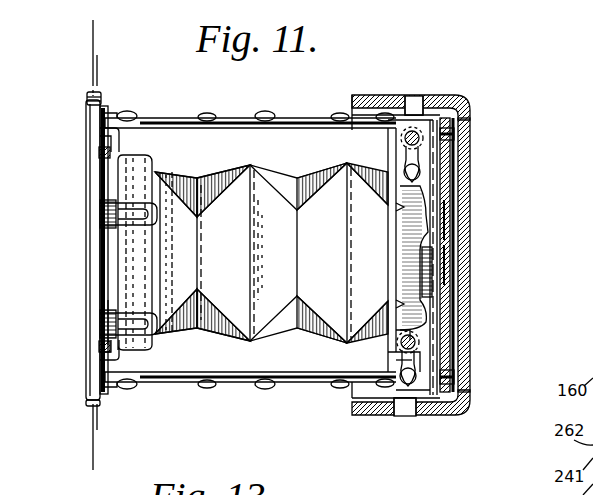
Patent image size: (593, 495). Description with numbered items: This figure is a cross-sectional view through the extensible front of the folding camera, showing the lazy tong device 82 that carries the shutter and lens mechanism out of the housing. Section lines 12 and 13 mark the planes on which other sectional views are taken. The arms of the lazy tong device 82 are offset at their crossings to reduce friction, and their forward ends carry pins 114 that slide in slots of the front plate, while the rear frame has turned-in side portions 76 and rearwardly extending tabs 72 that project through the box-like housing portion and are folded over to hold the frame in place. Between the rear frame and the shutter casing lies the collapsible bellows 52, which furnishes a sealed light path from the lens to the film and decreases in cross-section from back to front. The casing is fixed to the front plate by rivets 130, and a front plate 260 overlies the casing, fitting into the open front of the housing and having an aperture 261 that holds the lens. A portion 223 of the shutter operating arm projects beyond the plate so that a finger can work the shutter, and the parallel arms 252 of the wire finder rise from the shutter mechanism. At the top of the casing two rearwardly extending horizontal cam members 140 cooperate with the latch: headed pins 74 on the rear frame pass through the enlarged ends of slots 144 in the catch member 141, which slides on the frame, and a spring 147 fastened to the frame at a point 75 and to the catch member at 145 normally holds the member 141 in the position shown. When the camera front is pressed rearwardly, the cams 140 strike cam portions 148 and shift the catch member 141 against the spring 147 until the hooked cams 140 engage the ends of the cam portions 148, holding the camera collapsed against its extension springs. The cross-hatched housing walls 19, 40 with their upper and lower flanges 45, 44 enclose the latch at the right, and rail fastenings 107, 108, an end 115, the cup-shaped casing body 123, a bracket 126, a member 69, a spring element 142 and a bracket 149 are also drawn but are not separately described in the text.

The section line 12- 12 is at (88, 27).
The section line 13- 13 is at (97, 55).
The housing wall 19 is at (450, 286).
The outer casing wall 40 is at (469, 330).
The bottom flange of housing 44 is at (443, 416).
The top flange of housing 45 is at (428, 98).
The collapsible bellows 52 is at (280, 178).
The cam member 69 is at (440, 207).
The rearwardly extending tabs 72 is at (455, 135).
The headed pins 74 is at (405, 137).
The spring fastening point 75 is at (450, 316).
The turned-in side portions 76 is at (410, 118).
The lazy tong device 82 is at (257, 112).
The lower rail rivet 107 is at (200, 386).
The lower rail rivet 108 is at (345, 388).
The pins 114 is at (140, 100).
The inner housing wall 115 is at (467, 113).
The cup member 123 is at (138, 262).
The bracket 126 is at (115, 140).
The rivets 130 is at (86, 377).
The horizontal cam members 140 is at (150, 212).
The catch member 141 is at (386, 282).
The spring 142 is at (408, 255).
The slots 144 is at (442, 177).
The spring attachment point 145 is at (448, 224).
The spring 147 is at (440, 267).
The cam portions 148 is at (398, 204).
The bracket 149 is at (388, 352).
The portion of shutter operating arm 223 is at (88, 94).
The finder arms 252 is at (103, 166).
The front plate 260 is at (99, 327).
The aperture 261 is at (92, 240).